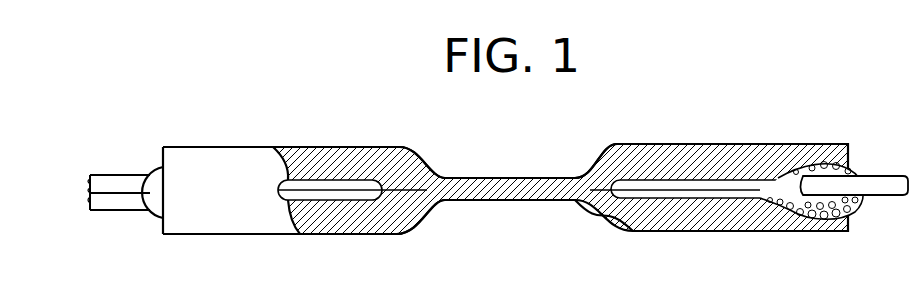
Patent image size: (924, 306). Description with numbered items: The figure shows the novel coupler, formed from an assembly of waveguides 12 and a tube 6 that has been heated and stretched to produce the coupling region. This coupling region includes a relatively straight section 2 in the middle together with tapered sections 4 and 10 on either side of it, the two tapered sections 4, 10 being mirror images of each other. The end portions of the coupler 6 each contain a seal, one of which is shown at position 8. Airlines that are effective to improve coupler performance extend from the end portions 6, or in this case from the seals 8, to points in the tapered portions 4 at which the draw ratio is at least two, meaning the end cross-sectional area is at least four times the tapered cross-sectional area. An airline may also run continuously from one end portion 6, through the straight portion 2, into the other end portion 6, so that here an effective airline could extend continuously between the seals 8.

The relatively straight section 2 is at (510, 178).
The tapered section 4 is at (428, 167).
The tube 6 is at (313, 150).
The seal 8 is at (346, 148).
The tapered section 10 is at (428, 210).
The waveguides 12 is at (115, 202).